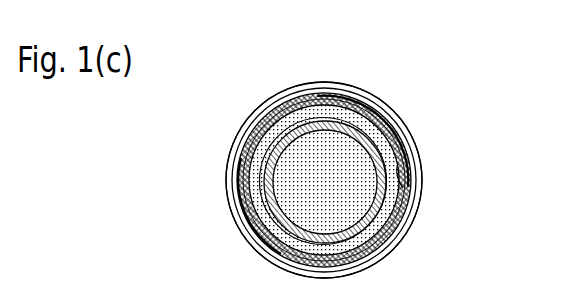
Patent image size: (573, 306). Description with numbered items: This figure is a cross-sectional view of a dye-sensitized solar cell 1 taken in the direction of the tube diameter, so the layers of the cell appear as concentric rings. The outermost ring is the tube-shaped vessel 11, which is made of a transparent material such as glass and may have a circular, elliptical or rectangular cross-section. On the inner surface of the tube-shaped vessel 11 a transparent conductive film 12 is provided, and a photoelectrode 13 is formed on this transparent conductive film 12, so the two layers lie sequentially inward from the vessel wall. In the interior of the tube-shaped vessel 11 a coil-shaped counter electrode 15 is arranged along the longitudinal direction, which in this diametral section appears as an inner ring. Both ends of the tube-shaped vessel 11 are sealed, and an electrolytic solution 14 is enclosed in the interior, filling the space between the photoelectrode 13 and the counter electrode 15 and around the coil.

The solar cell 1 is at (340, 80).
The tube-shaped vessel 11 is at (246, 119).
The transparent conductive film 12 is at (238, 207).
The photoelectrode 13 is at (405, 224).
The electrolytic solution 14 is at (408, 163).
The counter electrode 15 is at (392, 136).